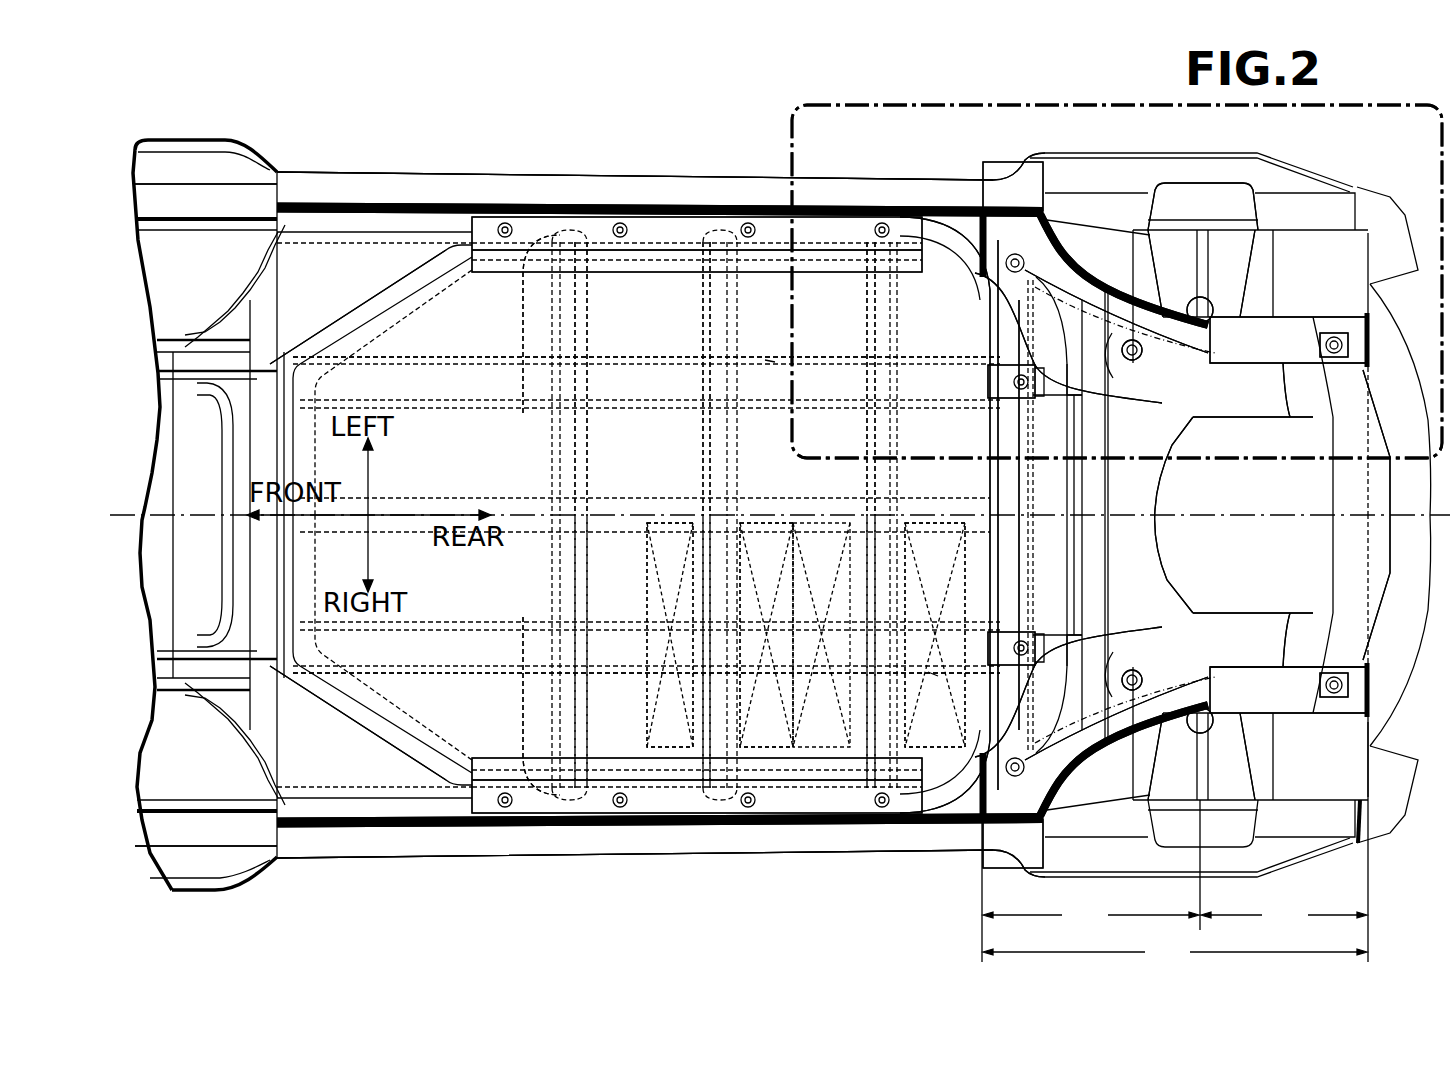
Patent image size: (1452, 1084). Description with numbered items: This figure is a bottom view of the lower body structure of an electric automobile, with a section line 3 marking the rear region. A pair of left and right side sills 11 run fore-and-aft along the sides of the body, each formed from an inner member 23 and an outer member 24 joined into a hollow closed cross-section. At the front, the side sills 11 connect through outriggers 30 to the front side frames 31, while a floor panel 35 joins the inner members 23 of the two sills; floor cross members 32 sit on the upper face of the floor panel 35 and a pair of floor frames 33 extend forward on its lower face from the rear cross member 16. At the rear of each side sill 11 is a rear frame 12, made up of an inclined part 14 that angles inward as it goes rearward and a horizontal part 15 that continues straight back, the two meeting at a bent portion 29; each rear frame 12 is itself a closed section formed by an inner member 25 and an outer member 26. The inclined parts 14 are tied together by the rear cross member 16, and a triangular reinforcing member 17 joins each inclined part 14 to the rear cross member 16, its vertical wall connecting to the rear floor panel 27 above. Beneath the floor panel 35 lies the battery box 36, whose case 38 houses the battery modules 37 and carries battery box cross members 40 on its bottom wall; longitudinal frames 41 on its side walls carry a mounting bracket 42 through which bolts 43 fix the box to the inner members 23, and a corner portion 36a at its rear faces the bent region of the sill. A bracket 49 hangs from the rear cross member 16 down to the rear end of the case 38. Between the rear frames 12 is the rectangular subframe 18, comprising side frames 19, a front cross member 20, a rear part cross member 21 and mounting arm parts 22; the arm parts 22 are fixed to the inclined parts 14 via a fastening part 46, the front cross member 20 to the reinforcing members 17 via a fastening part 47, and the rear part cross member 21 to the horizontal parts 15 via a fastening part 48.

The section line for FIG. 3 is at (778, 105).
The side sill 11 is at (519, 152).
The rear frame 12 is at (1197, 298).
The inclined part 14 is at (1048, 270).
The horizontal part 15 is at (1305, 320).
The rear cross member 16 is at (1000, 442).
The reinforcing member 17 is at (1107, 330).
The subframe 18 is at (1282, 668).
The side frame 19 is at (1252, 397).
The front cross member 20 is at (1148, 560).
The rear part cross member 21 is at (1380, 563).
The mounting arm part 22 is at (1042, 360).
The inner member 23 is at (450, 220).
The outer member 24 is at (700, 172).
The inner member 25 is at (1282, 347).
The outer member 26 is at (1100, 277).
The rear floor panel 27 is at (1201, 500).
The bent portion 29 is at (1207, 340).
The outrigger 30 is at (340, 255).
The front side frame 31 is at (180, 357).
The floor cross member 32 is at (550, 443).
The floor frame 33 is at (770, 360).
The floor panel 35 is at (818, 438).
The battery box 36 is at (1006, 568).
The corner portion 36a is at (997, 287).
The battery module 37 is at (670, 517).
The case 38 is at (440, 307).
The battery box cross member 40 is at (582, 425).
The longitudinal frame 41 is at (678, 265).
The mounting bracket 42 is at (652, 222).
The bolt 43 is at (618, 225).
The fastening part 46 is at (1015, 250).
The fastening part 47 is at (1132, 365).
The fastening part 48 is at (1334, 362).
The bracket 49 is at (988, 383).